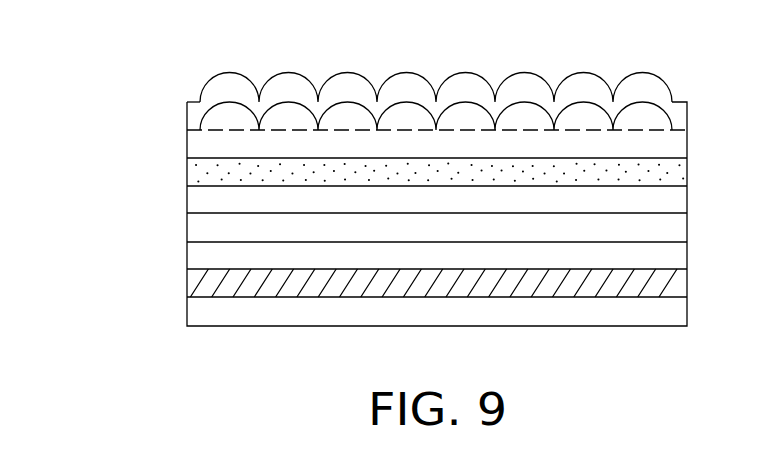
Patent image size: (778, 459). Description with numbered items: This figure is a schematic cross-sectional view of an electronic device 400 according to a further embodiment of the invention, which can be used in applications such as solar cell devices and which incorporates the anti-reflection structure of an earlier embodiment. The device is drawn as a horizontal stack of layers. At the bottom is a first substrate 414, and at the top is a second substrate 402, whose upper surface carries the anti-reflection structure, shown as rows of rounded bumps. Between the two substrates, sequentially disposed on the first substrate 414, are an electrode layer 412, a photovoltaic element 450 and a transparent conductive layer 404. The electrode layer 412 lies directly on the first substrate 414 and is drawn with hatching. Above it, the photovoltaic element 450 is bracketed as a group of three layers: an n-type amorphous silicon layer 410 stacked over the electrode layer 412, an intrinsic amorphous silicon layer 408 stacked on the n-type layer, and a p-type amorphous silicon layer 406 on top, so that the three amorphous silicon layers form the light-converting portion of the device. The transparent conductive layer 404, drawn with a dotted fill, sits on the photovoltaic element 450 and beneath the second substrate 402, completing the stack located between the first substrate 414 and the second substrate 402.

The electronic device 400 is at (96, 38).
The second substrate 402 is at (196, 143).
The transparent conductive layer 404 is at (196, 172).
The p-type amorphous silicon layer 406 is at (196, 200).
The intrinsic amorphous silicon layer 408 is at (196, 227).
The n-type amorphous silicon layer 410 is at (196, 255).
The electrode layer 412 is at (196, 283).
The first substrate 414 is at (196, 311).
The photovoltaic element 450 is at (92, 175).